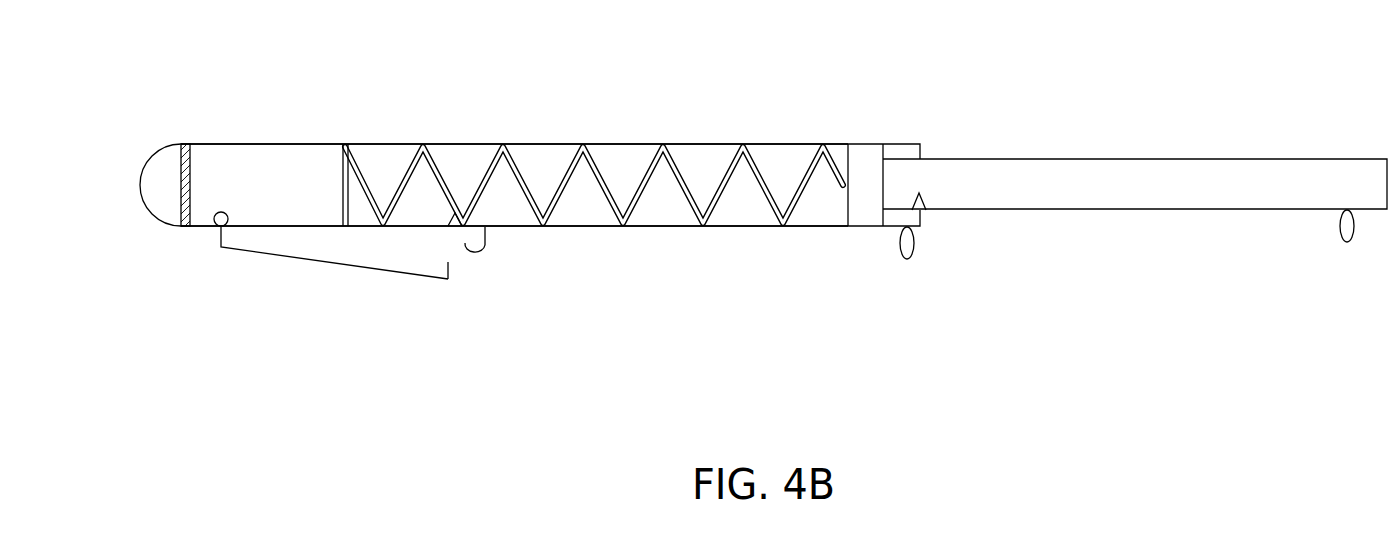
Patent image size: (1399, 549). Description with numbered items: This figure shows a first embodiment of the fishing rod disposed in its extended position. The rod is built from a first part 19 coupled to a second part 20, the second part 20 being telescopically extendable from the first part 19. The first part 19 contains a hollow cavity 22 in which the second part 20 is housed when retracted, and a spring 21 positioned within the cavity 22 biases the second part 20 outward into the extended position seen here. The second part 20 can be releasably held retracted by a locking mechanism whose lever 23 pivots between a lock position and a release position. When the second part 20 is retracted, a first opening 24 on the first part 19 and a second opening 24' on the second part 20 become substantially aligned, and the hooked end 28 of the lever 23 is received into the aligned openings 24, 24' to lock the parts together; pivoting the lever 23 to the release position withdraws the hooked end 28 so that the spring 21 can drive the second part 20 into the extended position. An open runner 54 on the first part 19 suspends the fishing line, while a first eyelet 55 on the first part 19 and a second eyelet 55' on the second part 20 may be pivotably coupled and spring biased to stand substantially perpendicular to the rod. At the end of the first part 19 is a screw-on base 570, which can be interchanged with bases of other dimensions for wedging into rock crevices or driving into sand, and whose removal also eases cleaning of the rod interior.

The first part 19 is at (697, 143).
The second part 20 is at (1190, 158).
The spring 21 is at (489, 153).
The hollow cavity 22 is at (784, 152).
The lever 23 is at (322, 263).
The first opening 24 is at (438, 236).
The second opening 24' is at (973, 226).
The hooked end 28 is at (452, 275).
The open runner 54 is at (488, 250).
The first eyelet 55 is at (941, 261).
The second eyelet 55' is at (1338, 277).
The screw-on base 570 is at (137, 212).